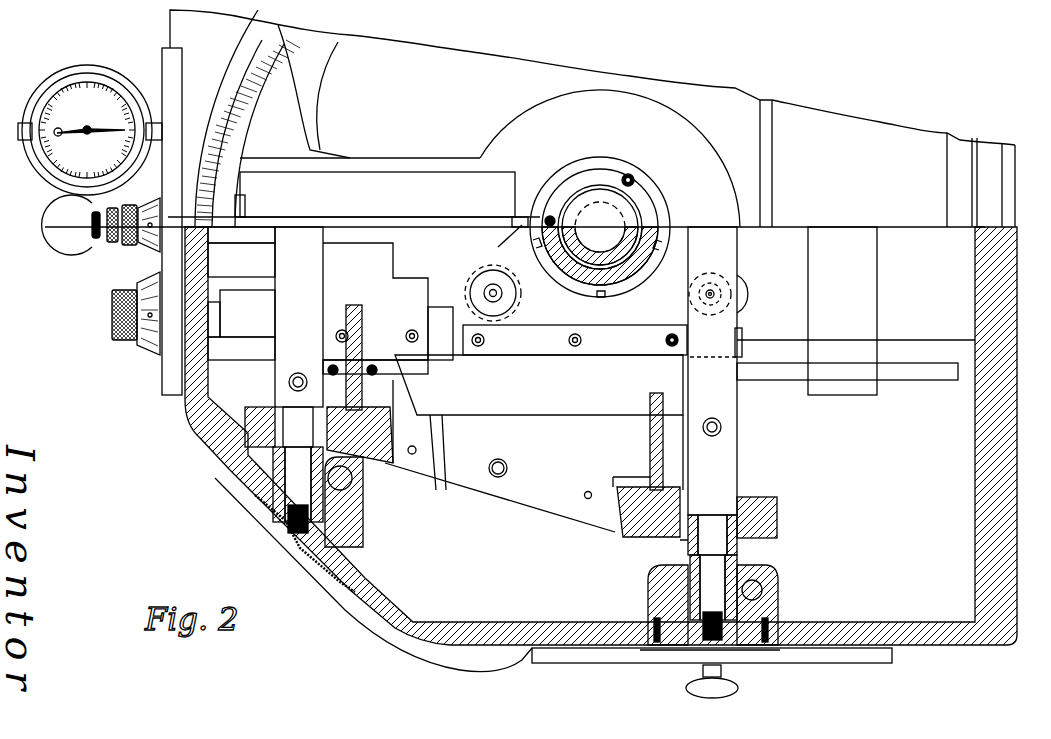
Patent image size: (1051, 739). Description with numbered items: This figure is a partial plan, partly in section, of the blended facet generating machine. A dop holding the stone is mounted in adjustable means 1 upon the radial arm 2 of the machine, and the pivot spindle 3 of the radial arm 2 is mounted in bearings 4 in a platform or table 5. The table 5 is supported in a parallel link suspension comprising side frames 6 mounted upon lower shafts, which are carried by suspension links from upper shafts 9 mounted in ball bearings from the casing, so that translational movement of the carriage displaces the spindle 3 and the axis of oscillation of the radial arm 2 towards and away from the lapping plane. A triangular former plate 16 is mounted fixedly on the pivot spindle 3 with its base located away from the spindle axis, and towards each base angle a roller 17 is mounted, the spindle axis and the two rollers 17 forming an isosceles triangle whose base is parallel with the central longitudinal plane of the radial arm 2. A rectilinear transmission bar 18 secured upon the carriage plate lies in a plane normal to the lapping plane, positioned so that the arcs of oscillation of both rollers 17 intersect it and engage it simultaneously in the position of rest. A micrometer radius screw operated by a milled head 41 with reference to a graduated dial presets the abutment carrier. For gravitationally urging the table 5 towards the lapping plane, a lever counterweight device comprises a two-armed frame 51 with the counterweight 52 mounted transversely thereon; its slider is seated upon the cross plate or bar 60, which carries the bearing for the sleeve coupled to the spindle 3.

The adjustable means 1 is at (12, 200).
The radial arm 2 is at (430, 162).
The pivot spindle 3 is at (578, 230).
The bearings 4 is at (655, 226).
The platform or table 5 is at (375, 88).
The side frames 6 is at (642, 522).
The upper shafts 9 is at (292, 358).
The triangular former plate 16 is at (568, 310).
The roller 17 is at (477, 268).
The bar 18 is at (603, 340).
The milled head 41 is at (120, 240).
The two-armed frame 51 is at (775, 382).
The counterweight 52 is at (863, 385).
The cross plate or bar 60 is at (943, 299).